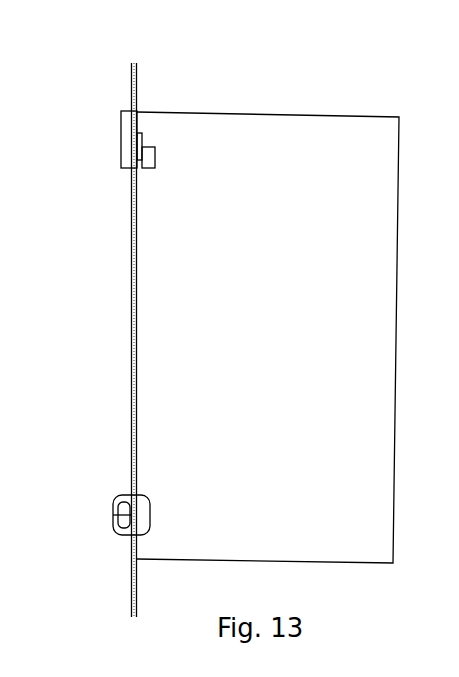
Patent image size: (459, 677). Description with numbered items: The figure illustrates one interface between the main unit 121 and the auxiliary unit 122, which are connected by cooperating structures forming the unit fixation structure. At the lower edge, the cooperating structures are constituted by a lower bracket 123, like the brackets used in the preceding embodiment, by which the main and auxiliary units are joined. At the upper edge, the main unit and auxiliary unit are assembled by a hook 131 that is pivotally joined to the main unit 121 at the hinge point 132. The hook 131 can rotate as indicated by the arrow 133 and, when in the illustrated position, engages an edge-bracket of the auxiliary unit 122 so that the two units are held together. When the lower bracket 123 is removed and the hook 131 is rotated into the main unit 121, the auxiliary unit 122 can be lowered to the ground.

The main unit 121 is at (135, 83).
The auxiliary unit 122 is at (310, 122).
The lower bracket 123 is at (143, 513).
The hook 131 is at (153, 165).
The hinge point 132 is at (128, 117).
The arrow 133 is at (140, 133).